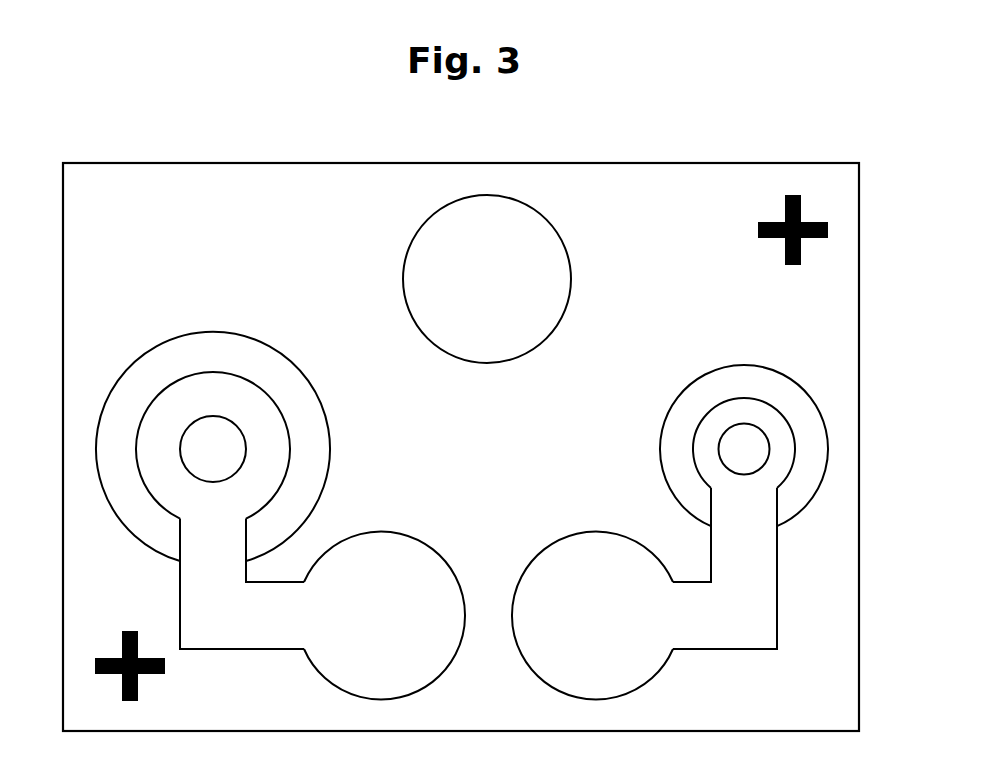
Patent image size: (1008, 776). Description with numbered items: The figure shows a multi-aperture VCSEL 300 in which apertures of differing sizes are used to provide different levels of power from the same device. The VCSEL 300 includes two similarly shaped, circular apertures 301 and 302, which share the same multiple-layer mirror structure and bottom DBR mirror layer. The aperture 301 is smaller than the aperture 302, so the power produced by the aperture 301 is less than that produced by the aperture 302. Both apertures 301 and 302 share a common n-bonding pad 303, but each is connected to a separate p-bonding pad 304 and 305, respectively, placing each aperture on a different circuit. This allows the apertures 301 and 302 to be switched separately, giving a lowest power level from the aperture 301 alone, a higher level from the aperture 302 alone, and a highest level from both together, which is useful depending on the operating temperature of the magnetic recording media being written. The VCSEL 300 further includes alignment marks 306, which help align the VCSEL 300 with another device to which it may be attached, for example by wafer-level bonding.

The VCSEL 300 is at (727, 130).
The aperture 301 is at (742, 366).
The aperture 302 is at (215, 331).
The n-bonding pad 303 is at (487, 279).
The p-bonding pad 304 is at (592, 616).
The p-bonding pad 305 is at (384, 616).
The alignment marks 306 is at (783, 239).